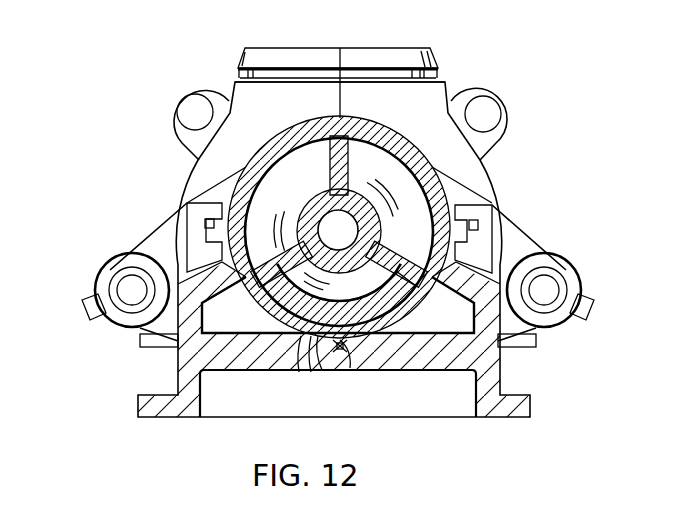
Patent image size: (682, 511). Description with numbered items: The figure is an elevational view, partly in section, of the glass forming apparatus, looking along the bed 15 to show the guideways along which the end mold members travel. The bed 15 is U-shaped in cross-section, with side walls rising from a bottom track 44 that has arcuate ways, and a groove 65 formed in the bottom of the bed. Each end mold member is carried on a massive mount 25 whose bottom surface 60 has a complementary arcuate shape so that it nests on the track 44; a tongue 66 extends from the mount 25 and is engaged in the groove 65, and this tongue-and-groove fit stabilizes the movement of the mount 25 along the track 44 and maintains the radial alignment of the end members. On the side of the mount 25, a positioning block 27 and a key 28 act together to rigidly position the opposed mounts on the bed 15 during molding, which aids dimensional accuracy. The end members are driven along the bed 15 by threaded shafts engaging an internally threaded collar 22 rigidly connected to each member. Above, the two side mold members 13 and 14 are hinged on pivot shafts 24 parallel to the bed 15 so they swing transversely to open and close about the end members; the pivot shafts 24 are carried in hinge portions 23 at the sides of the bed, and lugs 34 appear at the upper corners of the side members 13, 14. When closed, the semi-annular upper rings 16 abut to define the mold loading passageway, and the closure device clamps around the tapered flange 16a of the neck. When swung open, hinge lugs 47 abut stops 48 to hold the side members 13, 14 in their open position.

The side mold member 13 is at (293, 102).
The side mold member 14 is at (373, 102).
The bed 15 is at (444, 376).
The upper ring 16 is at (355, 49).
The flange 16a is at (438, 62).
The internally threaded collar 22 is at (300, 212).
The bearing housing 23 is at (158, 245).
The pivot shaft 24 is at (124, 290).
The mount 25 is at (456, 170).
The positioning block 27 is at (190, 210).
The key 28 is at (211, 220).
The mounting lug 34 is at (203, 108).
The bottom track 44 is at (297, 378).
The hinge lug 47 is at (88, 312).
The stop 48 is at (142, 343).
The bottom surface 60 is at (306, 372).
The groove 65 is at (352, 350).
The tongue 66 is at (340, 352).